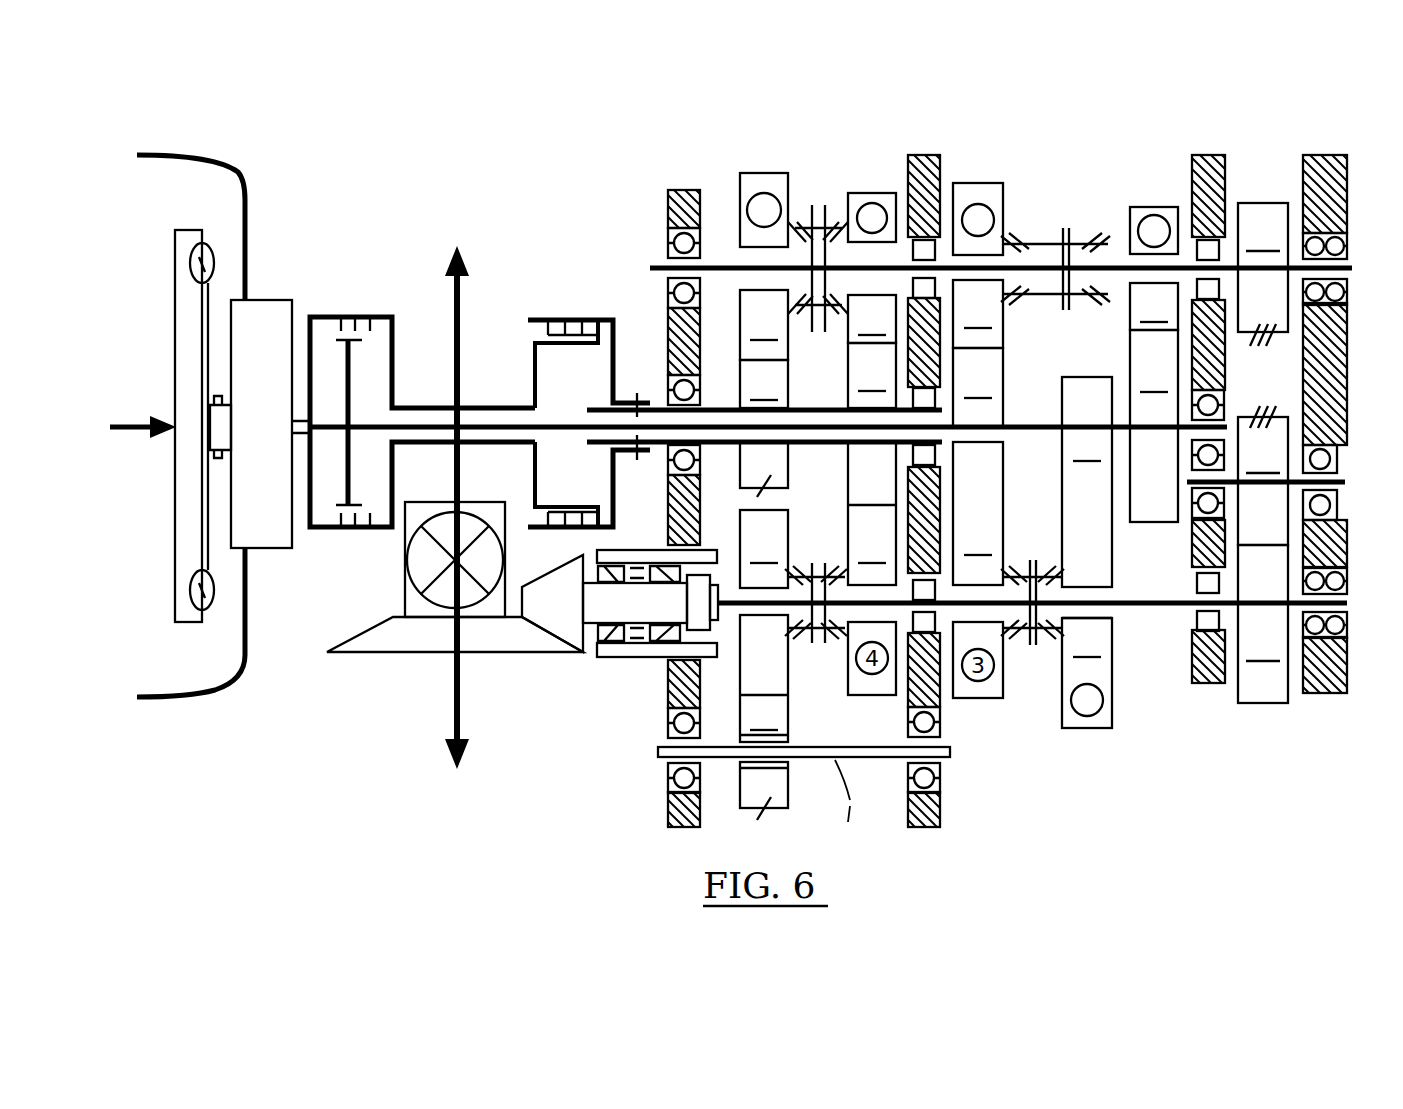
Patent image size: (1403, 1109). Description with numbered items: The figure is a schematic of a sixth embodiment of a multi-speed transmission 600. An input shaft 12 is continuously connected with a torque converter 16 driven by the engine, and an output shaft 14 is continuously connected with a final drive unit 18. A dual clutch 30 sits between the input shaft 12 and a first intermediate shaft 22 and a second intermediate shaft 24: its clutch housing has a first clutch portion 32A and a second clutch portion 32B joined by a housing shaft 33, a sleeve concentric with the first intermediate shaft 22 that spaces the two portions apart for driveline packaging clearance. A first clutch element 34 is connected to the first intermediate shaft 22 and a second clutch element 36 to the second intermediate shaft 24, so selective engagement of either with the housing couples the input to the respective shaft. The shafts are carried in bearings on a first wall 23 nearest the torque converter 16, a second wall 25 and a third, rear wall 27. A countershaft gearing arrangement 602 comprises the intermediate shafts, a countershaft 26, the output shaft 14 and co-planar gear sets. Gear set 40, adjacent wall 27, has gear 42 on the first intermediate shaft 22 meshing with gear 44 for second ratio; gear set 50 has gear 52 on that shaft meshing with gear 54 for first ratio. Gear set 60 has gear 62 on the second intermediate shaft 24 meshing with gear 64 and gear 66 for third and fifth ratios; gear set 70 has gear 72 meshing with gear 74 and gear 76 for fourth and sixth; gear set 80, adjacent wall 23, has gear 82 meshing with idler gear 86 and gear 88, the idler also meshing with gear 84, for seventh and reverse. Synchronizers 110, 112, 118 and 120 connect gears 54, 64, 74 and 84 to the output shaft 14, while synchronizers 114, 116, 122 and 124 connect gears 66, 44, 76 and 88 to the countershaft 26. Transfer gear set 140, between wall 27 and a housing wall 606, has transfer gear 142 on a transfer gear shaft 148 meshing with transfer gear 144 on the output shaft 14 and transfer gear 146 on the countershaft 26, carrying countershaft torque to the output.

The multi-speed transmission 600 is at (296, 150).
The torque converter 16 is at (172, 532).
The input shaft 12 is at (298, 433).
The dual clutch 30 is at (470, 472).
The first clutch portion 32A is at (345, 317).
The first clutch element 34 is at (350, 380).
The second clutch portion 32B is at (535, 372).
The second clutch element 36 is at (575, 320).
The housing shaft 33 is at (497, 445).
The final drive unit 18 is at (608, 662).
The first intermediate shaft 22 is at (660, 427).
The second intermediate shaft 24 is at (826, 445).
The first support wall 23 is at (675, 208).
The second support wall 25 is at (925, 827).
The gear set 80 is at (763, 253).
The gear 88 is at (764, 325).
The gear 82 is at (764, 384).
The synchronizer 124 is at (803, 222).
The synchronizer 122 is at (806, 312).
The gear set 70 is at (897, 253).
The gear 76 is at (872, 319).
The gear 72 is at (872, 375).
The gear set 60 is at (1005, 268).
The gear 66 is at (978, 314).
The gear 62 is at (978, 387).
The synchronizer 116 is at (1105, 242).
The synchronizer 114 is at (1022, 296).
The countershaft gearing arrangement 602 is at (1168, 415).
The gear set 40 is at (1134, 329).
The gear 44 is at (1154, 306).
The gear 42 is at (1154, 426).
The third support wall 27 is at (1208, 683).
The countershaft 26 is at (1352, 268).
The gear 52 is at (1087, 482).
The transfer gear set 140 is at (1269, 409).
The transfer gear 146 is at (1263, 274).
The transfer gear 142 is at (1263, 475).
The transfer gear 144 is at (1263, 624).
The wall 606 is at (1330, 155).
The transfer gear shaft 148 is at (1340, 482).
The output shaft 14 is at (1143, 603).
The gear 84 is at (764, 549).
The gear 74 is at (872, 513).
The synchronizer 118 is at (832, 568).
The synchronizer 120 is at (802, 628).
The idler gear 86 is at (764, 678).
The gear 64 is at (978, 513).
The synchronizer 110 is at (1050, 570).
The synchronizer 112 is at (1015, 630).
The gear set 50 is at (1080, 709).
The gear 54 is at (1087, 637).